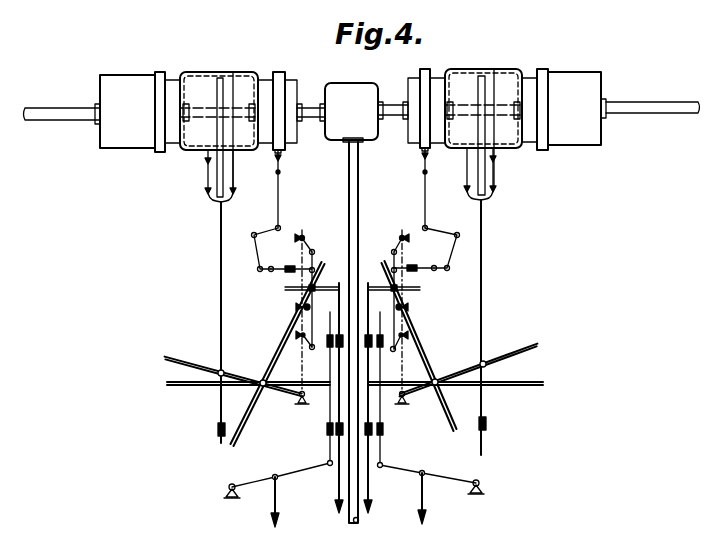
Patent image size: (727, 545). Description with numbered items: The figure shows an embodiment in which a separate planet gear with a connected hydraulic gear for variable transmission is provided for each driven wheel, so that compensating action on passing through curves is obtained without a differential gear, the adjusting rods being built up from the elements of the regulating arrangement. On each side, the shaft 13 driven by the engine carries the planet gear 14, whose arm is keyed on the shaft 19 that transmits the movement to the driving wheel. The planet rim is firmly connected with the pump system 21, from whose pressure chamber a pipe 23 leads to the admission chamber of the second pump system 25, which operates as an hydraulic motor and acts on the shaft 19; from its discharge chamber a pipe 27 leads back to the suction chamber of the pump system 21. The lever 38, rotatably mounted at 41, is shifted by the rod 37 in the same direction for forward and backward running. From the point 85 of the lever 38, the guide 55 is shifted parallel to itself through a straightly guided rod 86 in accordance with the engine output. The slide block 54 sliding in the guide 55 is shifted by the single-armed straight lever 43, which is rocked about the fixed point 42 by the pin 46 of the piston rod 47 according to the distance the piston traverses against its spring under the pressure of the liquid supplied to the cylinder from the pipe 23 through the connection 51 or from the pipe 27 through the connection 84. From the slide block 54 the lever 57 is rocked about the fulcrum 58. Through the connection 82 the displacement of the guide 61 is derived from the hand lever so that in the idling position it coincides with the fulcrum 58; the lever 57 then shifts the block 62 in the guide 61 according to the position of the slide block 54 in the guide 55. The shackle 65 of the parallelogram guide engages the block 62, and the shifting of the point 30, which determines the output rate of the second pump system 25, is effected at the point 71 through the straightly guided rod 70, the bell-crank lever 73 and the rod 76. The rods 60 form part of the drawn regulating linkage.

The shaft 13 is at (312, 122).
The planet gear 14 is at (137, 143).
The shaft 19 is at (70, 108).
The pump system 21 is at (160, 147).
The pipe 23 is at (176, 147).
The second pump system 25 is at (280, 72).
The pipe 27 is at (215, 72).
The point 30 is at (280, 172).
The rod 37 is at (360, 503).
The lever 38 is at (354, 474).
The mounting point 41 is at (229, 486).
The fixed point 42 is at (306, 398).
The single-armed straight lever 43 is at (190, 359).
The pin 46 is at (225, 372).
The piston rod 47 is at (221, 310).
The connection 51 is at (204, 178).
The slide block 54 is at (264, 387).
The guide 55 is at (190, 386).
The lever 57 is at (288, 336).
The fulcrum 58 is at (294, 308).
The control rod 60 is at (339, 301).
The guide 61 is at (286, 289).
The block 62 is at (398, 284).
The shackle 65 is at (391, 355).
The straightly guided rod 70 is at (286, 272).
The point 71 is at (404, 250).
The bell-crank lever 73 is at (258, 252).
The rod 76 is at (280, 215).
The connection 82 is at (356, 516).
The connection 84 is at (234, 186).
The point 85 is at (381, 468).
The straightly guided rod 86 is at (467, 188).